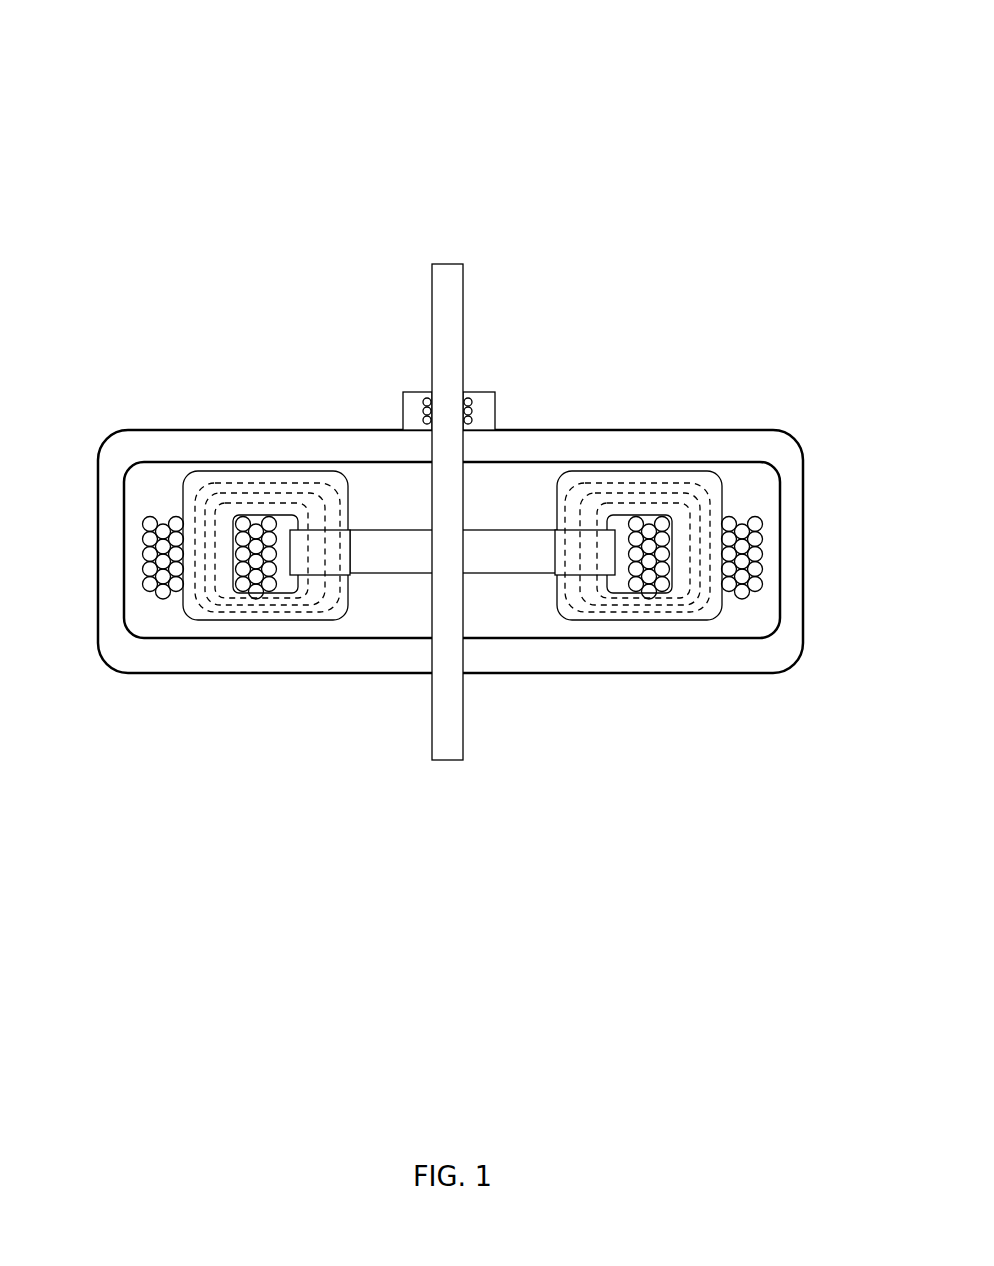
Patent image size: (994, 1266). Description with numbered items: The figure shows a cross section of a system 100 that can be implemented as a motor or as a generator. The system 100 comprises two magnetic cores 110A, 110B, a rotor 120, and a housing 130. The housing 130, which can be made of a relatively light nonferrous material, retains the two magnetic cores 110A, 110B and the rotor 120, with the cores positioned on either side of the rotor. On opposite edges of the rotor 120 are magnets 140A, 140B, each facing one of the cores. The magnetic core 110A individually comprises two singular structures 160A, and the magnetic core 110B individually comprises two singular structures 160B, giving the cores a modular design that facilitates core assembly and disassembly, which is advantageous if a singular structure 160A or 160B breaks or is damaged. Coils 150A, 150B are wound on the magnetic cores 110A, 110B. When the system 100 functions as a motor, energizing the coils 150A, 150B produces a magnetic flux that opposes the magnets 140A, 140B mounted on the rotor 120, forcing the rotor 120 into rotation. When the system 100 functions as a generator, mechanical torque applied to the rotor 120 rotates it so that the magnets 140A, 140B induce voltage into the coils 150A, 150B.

The system 100 is at (570, 58).
The magnetic core 110A is at (350, 620).
The magnetic core 110B is at (720, 620).
The rotor 120 is at (507, 540).
The housing 130 is at (777, 452).
The magnet 140A is at (338, 562).
The magnet 140B is at (585, 543).
The coil 150A is at (157, 516).
The coil 150B is at (762, 533).
The singular structure 160A is at (244, 520).
The singular structure 160B is at (709, 553).